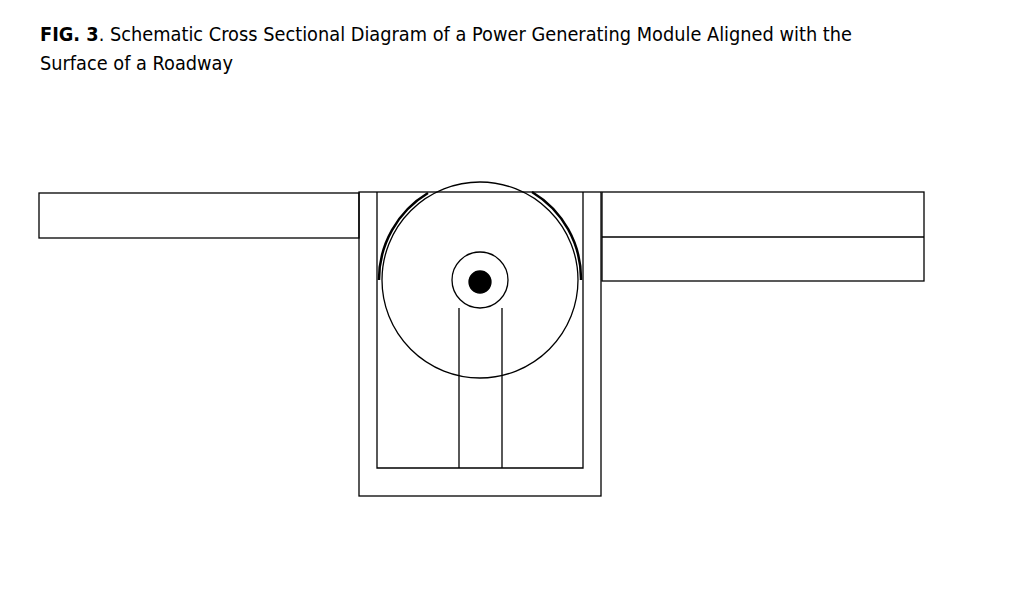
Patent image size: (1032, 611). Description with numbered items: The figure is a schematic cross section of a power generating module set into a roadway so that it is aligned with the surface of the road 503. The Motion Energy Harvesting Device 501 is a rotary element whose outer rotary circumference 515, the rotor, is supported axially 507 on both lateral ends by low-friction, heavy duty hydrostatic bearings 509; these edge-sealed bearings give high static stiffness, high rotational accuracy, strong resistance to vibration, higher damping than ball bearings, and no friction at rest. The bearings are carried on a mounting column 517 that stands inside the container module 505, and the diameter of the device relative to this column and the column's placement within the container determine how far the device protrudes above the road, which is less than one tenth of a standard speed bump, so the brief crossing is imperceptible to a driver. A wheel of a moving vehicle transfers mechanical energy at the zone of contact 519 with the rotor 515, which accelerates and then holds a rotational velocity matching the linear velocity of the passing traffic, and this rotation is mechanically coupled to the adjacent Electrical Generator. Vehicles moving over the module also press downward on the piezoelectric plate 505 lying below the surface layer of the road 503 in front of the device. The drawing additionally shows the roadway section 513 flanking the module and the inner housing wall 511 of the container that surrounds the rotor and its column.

The Motion Energy Harvesting Device 501 is at (479, 166).
The road 503 is at (762, 192).
The piezoelectric plate 505 is at (762, 281).
The axial support 507 is at (484, 286).
The low-friction hydrostatic bearings 509 is at (452, 280).
The inner housing wall 511 is at (377, 331).
The roadway 513 is at (200, 238).
The outer rotary circumference 515 is at (421, 362).
The mounting column 517 is at (480, 423).
The zone of contact 519 is at (397, 220).